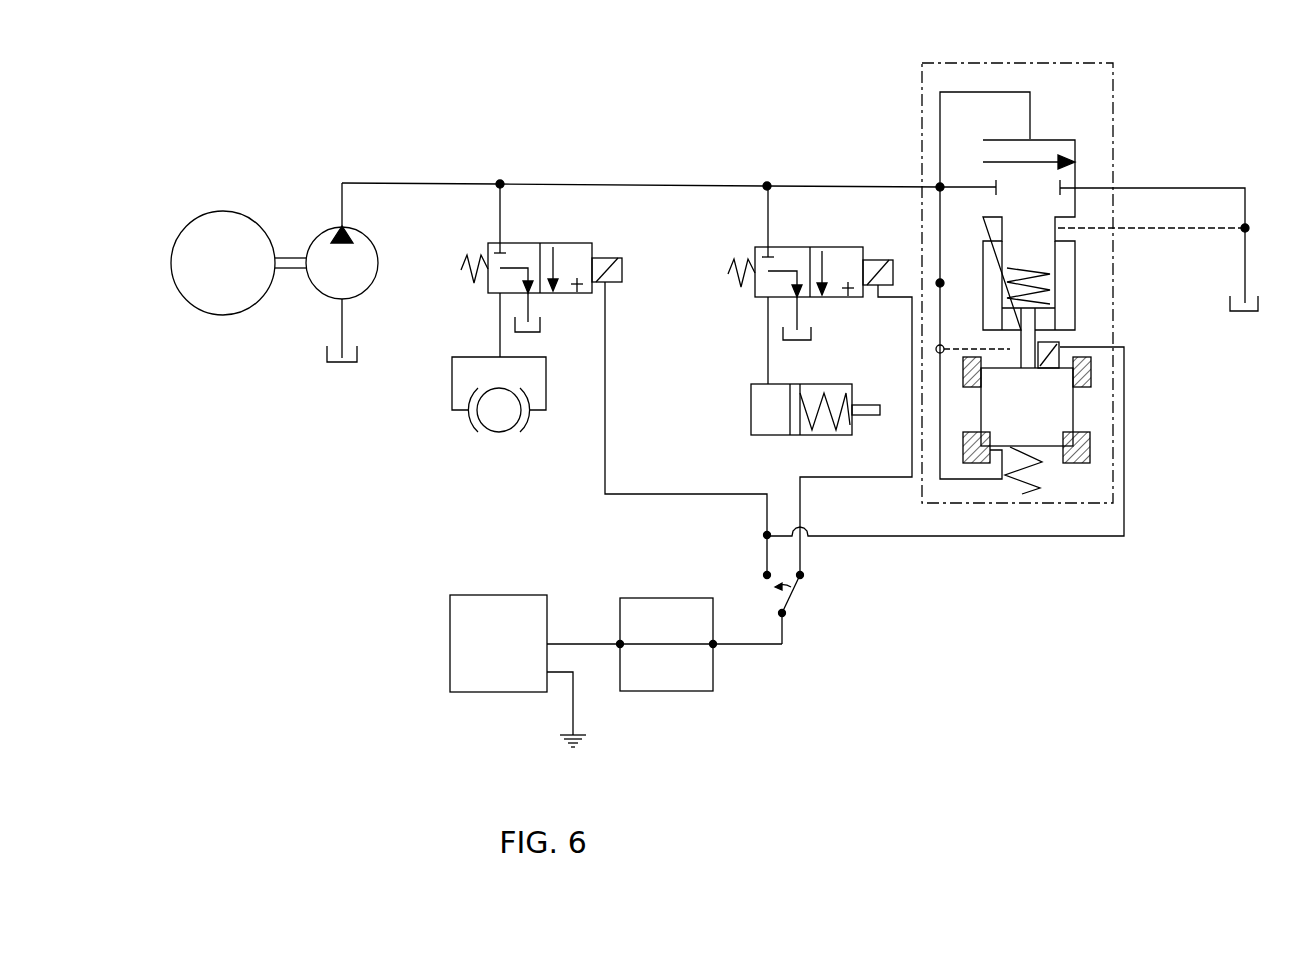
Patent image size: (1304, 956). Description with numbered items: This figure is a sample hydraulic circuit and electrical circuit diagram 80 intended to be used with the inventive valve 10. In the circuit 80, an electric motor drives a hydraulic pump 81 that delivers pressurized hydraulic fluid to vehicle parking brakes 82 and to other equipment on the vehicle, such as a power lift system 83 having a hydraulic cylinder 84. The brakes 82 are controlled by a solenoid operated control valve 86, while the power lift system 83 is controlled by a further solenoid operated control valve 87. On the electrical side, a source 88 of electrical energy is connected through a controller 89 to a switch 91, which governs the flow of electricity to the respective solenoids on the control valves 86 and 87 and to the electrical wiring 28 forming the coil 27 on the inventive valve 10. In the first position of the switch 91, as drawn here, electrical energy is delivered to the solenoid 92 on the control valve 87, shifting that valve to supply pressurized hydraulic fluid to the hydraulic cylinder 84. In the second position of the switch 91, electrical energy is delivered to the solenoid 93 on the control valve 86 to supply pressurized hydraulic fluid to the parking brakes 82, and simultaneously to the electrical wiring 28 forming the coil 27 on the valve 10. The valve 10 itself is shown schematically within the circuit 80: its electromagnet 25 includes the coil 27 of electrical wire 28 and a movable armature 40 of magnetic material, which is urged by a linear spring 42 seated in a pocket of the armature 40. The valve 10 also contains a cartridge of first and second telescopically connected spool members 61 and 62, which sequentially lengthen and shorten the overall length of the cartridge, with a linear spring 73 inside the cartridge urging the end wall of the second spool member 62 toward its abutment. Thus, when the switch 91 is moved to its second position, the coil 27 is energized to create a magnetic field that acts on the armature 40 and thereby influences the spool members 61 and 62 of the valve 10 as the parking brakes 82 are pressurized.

The valve 10 is at (1014, 360).
The electromagnet 25 is at (1165, 461).
The coil 27 is at (1088, 458).
The electrical wire 28 is at (1004, 442).
The armature 40 is at (1086, 499).
The linear spring 42 is at (1048, 541).
The first spool member 61 is at (1068, 312).
The second spool member 62 is at (1045, 232).
The linear spring 73 is at (1062, 284).
The hydraulic circuit and electrical circuit diagram 80 is at (1175, 78).
The hydraulic pump 81 is at (314, 292).
The vehicle parking brakes 82 is at (484, 441).
The power lift system 83 is at (771, 413).
The hydraulic cylinder 84 is at (766, 438).
The solenoid operated control valve 86 is at (569, 243).
The further solenoid operated control valve 87 is at (835, 247).
The source of electrical energy 88 is at (482, 690).
The controller 89 is at (677, 691).
The switch 91 is at (785, 572).
The solenoid 92 is at (880, 259).
The solenoid 93 is at (623, 258).